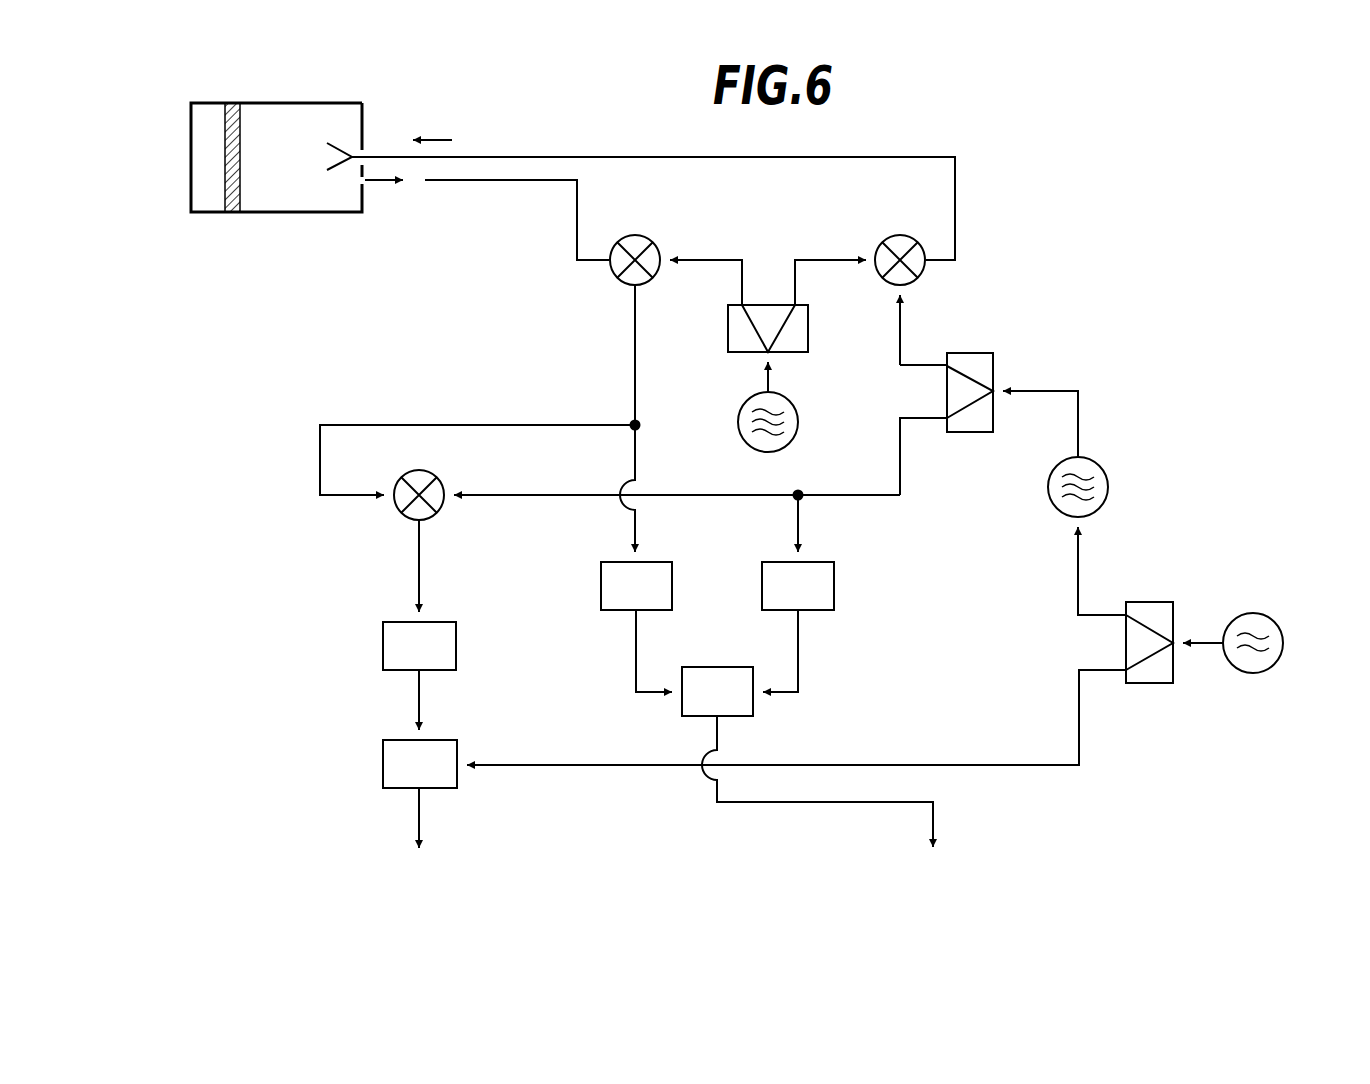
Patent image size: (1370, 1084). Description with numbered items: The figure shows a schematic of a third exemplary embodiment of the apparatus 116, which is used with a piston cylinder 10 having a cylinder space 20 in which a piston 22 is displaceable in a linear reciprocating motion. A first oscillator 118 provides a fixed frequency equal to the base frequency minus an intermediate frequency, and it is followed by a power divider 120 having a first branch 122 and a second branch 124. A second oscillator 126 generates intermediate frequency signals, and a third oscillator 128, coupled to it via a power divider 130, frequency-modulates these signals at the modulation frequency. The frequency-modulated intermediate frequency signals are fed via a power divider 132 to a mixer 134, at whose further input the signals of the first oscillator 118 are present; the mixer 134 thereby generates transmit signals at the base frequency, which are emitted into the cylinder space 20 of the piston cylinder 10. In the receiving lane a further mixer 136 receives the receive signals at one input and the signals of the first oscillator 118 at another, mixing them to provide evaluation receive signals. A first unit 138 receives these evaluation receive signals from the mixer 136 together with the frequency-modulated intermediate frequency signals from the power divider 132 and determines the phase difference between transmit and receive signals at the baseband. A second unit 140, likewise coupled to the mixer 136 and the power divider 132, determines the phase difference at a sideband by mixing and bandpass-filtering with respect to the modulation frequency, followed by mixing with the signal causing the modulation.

The piston cylinder 10 is at (320, 214).
The cylinder space 20 is at (297, 117).
The piston 22 is at (233, 202).
The apparatus 116 is at (1092, 183).
The first oscillator 118 is at (742, 417).
The power divider 120 is at (797, 340).
The first branch 122 is at (747, 324).
The second branch 124 is at (793, 324).
The second oscillator 126 is at (1108, 484).
The third oscillator 128 is at (1250, 673).
The power divider 130 is at (1150, 670).
The power divider 132 is at (975, 355).
The mixer 134 is at (898, 250).
The mixer 136 is at (637, 250).
The first unit 138 is at (857, 507).
The second unit 140 is at (283, 435).